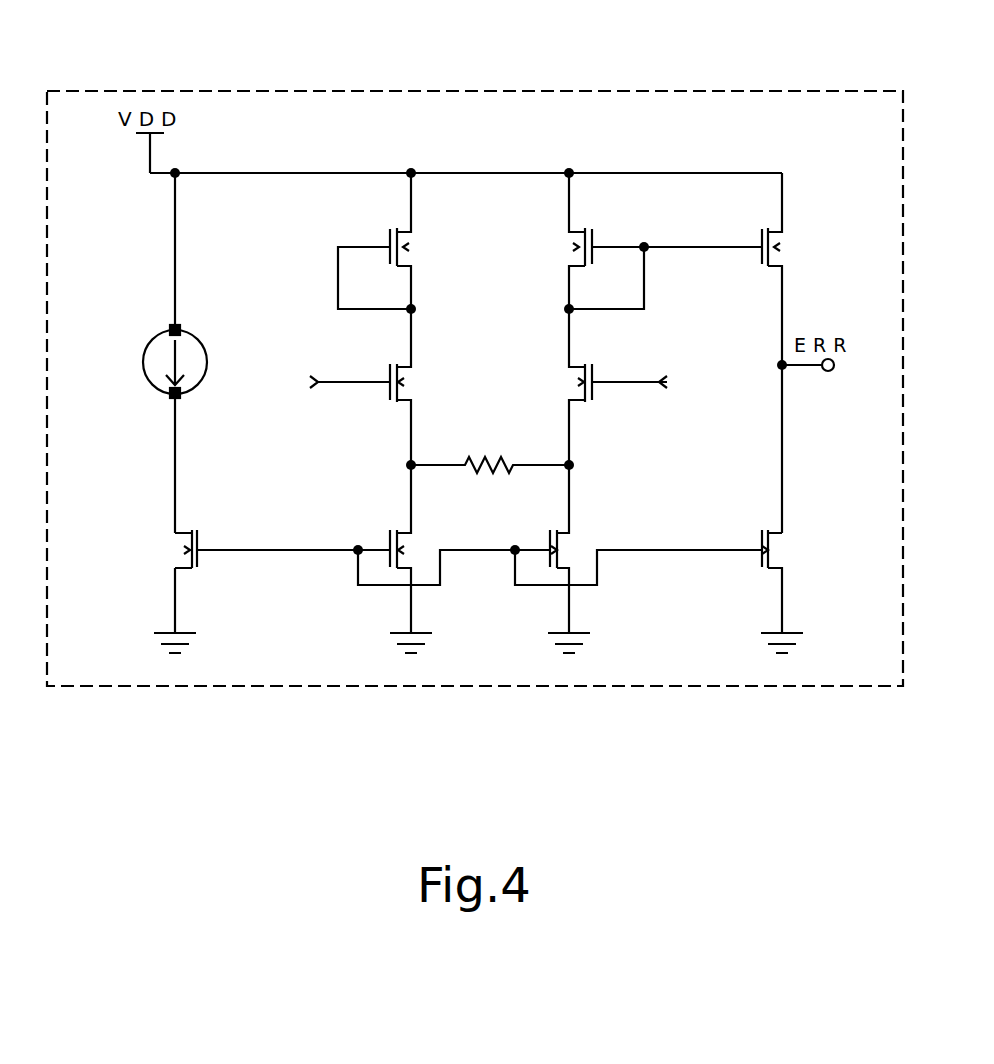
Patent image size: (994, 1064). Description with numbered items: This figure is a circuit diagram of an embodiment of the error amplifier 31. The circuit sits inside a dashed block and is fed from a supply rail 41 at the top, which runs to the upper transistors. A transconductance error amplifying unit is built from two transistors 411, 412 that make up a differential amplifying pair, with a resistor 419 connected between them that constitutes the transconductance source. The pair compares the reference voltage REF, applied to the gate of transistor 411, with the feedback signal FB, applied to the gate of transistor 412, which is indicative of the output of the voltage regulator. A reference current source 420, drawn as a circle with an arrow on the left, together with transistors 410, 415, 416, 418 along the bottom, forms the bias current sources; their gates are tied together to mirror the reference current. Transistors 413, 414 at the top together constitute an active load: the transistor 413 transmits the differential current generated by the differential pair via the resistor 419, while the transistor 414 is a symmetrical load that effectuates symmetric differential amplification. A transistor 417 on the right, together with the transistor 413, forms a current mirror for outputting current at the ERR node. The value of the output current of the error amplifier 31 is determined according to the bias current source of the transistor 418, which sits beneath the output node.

The error amplifier 31 is at (561, 68).
The supply rail 41 is at (487, 150).
The transistor 410 is at (229, 571).
The transistor 411 is at (612, 424).
The transistor 412 is at (370, 437).
The transistor 413 is at (612, 223).
The transistor 414 is at (368, 225).
The transistor 415 is at (625, 572).
The transistor 416 is at (457, 572).
The transistor 417 is at (805, 233).
The transistor 418 is at (817, 561).
The resistor 419 is at (512, 413).
The reference current source 420 is at (208, 310).